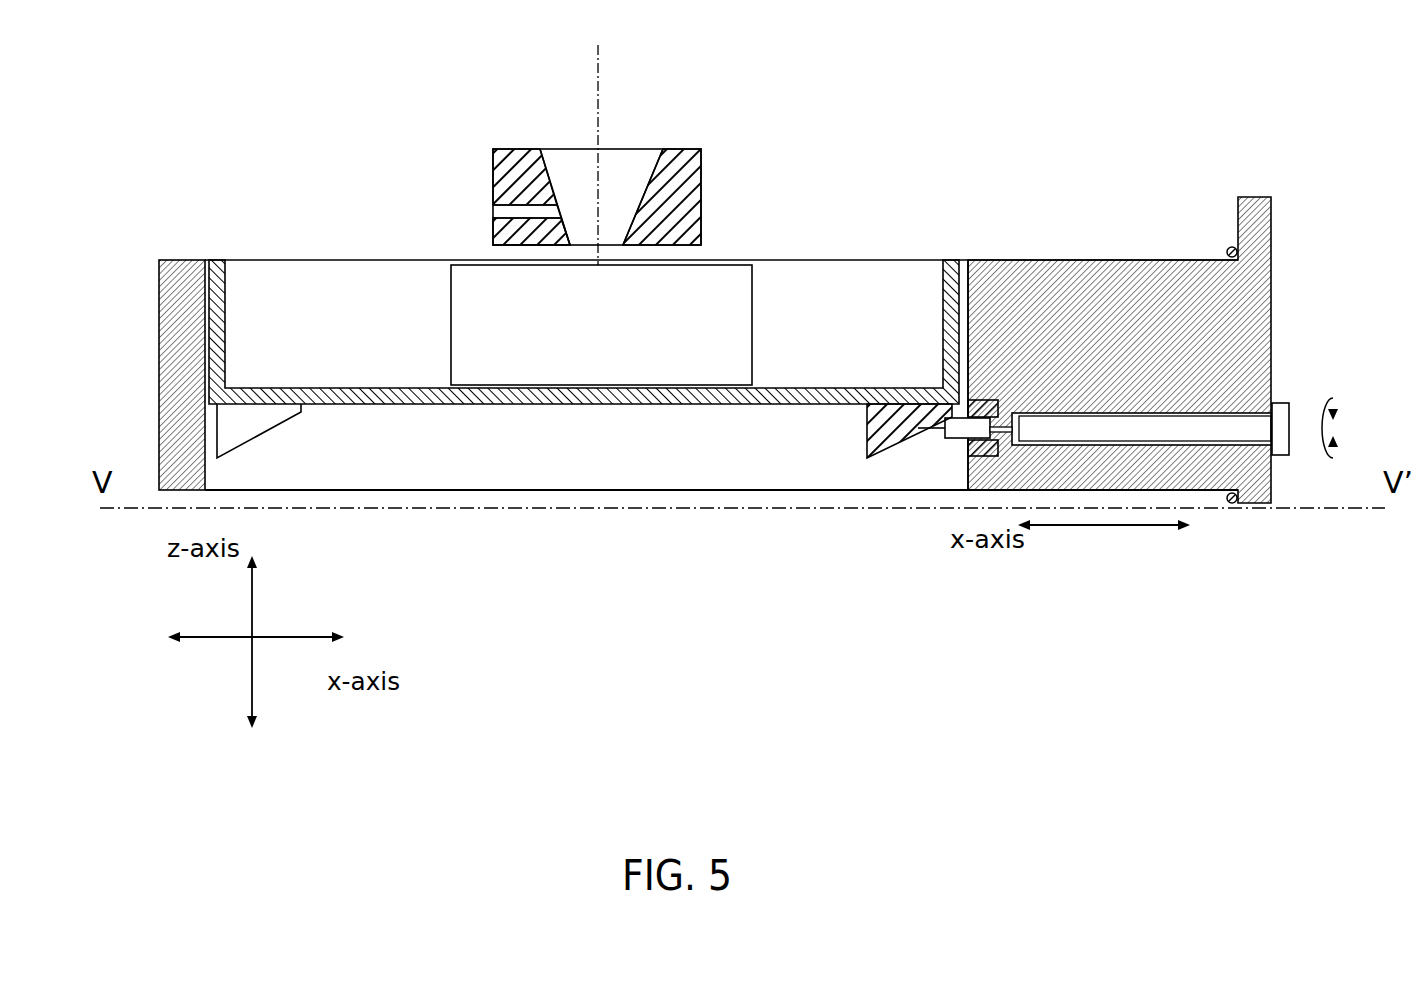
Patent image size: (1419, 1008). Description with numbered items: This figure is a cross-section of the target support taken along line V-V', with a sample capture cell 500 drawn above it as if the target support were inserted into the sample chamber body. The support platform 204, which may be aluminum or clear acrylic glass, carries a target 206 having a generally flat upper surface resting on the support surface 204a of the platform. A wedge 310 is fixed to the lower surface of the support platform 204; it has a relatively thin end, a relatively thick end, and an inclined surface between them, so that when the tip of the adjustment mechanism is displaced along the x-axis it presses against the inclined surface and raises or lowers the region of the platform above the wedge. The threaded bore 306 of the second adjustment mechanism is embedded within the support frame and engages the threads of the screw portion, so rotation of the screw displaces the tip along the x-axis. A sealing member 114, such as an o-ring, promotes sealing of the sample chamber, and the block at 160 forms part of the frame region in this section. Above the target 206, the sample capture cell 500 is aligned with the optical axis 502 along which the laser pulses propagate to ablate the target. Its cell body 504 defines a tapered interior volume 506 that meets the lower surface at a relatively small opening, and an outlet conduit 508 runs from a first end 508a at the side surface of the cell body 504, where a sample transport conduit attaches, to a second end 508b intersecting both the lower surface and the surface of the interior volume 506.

The sealing member 114 is at (1226, 252).
The drive unit 160 is at (1294, 184).
The support platform 204 is at (215, 260).
The support surface 204a is at (843, 380).
The target 206 is at (462, 287).
The threaded bore 306 is at (977, 402).
The wedge 310 is at (867, 442).
The sample capture cell 500 is at (736, 130).
The optical axis 502 is at (593, 62).
The cell body 504 is at (680, 152).
The interior volume 506 is at (628, 175).
The outlet conduit 508 is at (517, 210).
The first end 508a is at (483, 211).
The second end 508b is at (564, 254).